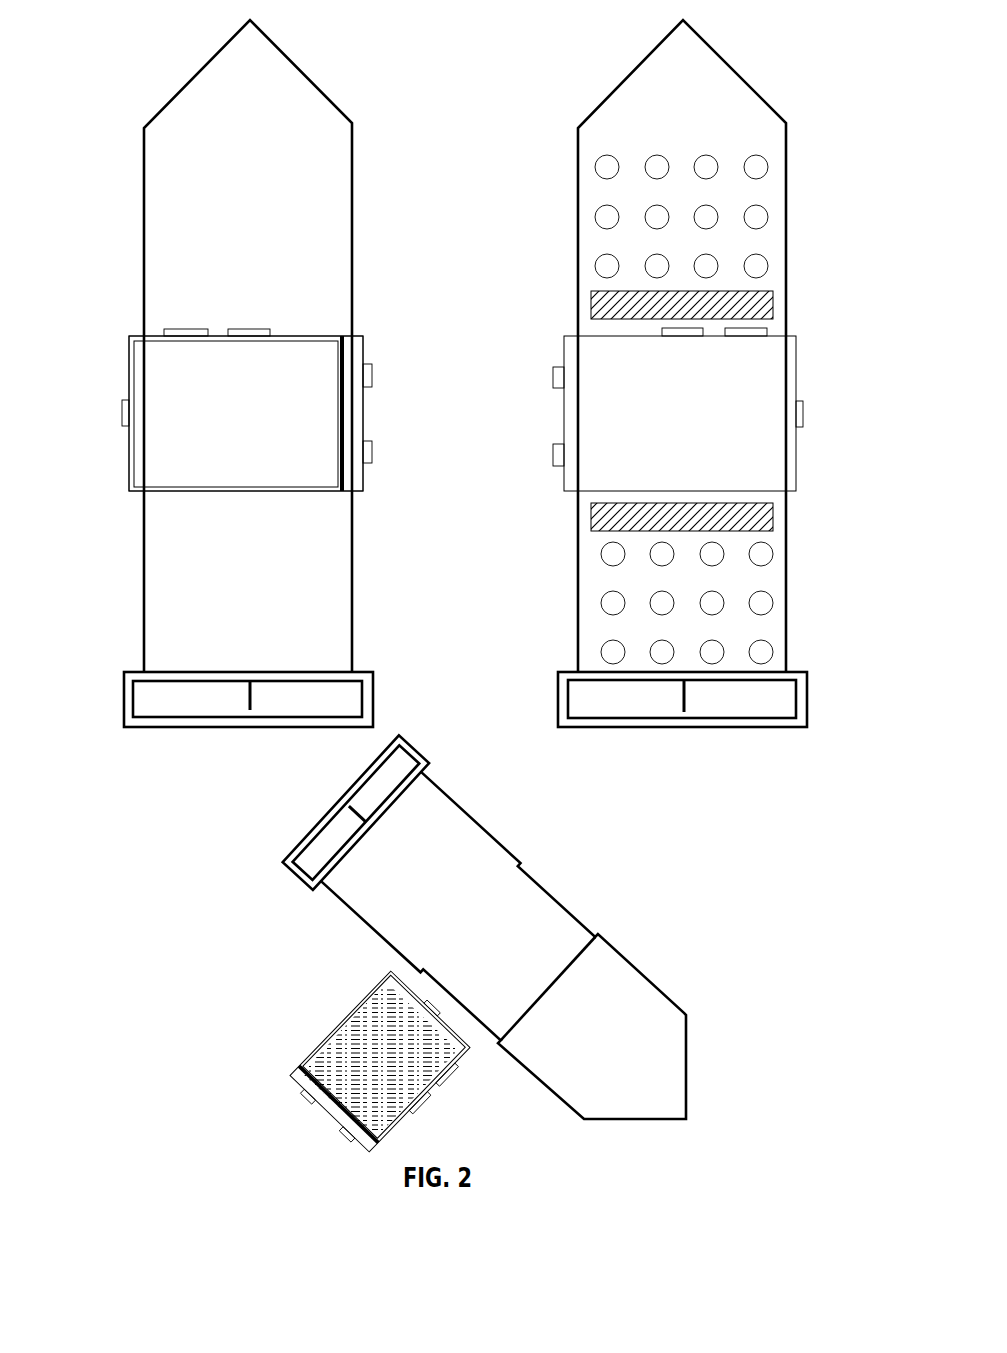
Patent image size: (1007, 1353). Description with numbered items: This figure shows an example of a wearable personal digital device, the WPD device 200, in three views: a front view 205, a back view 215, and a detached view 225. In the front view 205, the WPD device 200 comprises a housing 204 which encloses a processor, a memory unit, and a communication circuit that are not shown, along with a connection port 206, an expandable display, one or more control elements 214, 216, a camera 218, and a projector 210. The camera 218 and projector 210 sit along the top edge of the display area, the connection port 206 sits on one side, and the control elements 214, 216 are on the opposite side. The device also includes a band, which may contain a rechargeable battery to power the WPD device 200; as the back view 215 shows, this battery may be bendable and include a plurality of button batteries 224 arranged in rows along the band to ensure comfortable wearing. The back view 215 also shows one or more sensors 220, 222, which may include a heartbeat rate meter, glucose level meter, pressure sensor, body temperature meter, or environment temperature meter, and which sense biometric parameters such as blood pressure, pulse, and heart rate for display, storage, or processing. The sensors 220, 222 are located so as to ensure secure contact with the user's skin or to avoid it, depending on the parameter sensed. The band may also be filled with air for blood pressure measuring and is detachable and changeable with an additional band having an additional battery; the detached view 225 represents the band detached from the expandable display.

The WPD device 200 is at (872, 33).
The housing 204 is at (128, 340).
The front view 205 is at (110, 106).
The connection port 206 is at (122, 408).
The projector 210 is at (249, 326).
The control element 214 is at (373, 374).
The back view 215 is at (857, 150).
The control element 216 is at (373, 452).
The camera 218 is at (187, 328).
The sensor 220 is at (590, 300).
The sensor 222 is at (590, 512).
The button batteries 224 is at (595, 168).
The detached view 225 is at (663, 905).